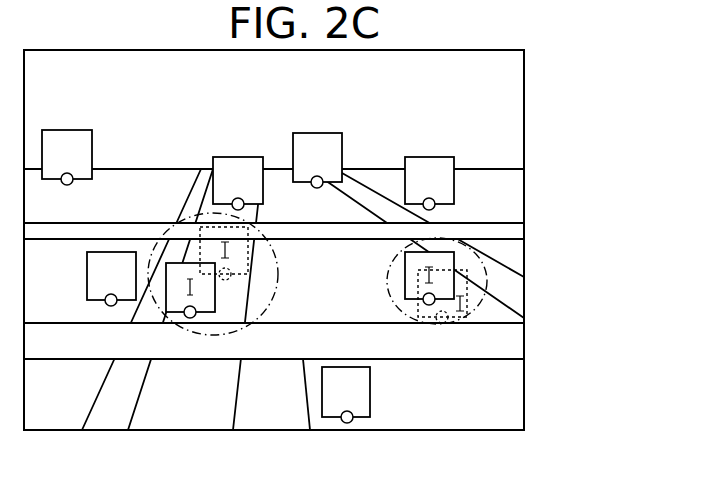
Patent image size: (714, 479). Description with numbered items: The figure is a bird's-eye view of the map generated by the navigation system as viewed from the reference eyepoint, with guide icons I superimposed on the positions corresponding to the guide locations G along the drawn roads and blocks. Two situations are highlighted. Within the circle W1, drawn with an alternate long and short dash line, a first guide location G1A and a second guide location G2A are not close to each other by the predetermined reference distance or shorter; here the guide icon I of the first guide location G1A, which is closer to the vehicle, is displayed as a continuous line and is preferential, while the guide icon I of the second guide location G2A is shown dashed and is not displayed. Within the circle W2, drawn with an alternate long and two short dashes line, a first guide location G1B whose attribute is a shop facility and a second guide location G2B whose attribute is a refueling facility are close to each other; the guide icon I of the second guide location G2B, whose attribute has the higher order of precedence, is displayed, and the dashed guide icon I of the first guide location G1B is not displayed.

The guide icon I is at (368, 273).
The guide location G is at (63, 184).
The circle W1 is at (176, 223).
The circle W2 is at (388, 280).
The first guide location G1A is at (188, 320).
The second guide location G2A is at (203, 226).
The first guide location G1B is at (440, 318).
The second guide location G2B is at (549, 284).